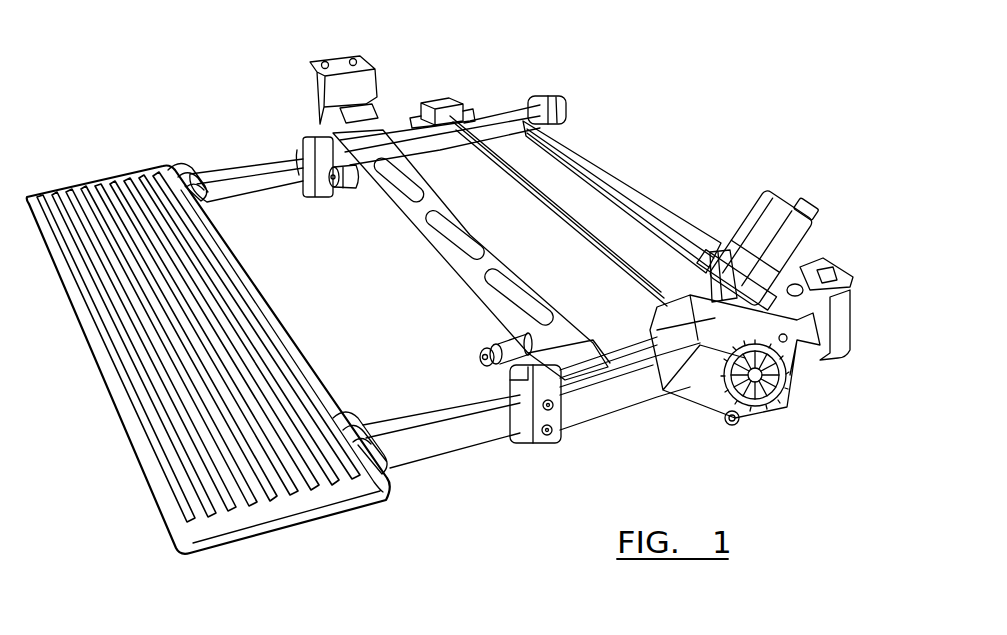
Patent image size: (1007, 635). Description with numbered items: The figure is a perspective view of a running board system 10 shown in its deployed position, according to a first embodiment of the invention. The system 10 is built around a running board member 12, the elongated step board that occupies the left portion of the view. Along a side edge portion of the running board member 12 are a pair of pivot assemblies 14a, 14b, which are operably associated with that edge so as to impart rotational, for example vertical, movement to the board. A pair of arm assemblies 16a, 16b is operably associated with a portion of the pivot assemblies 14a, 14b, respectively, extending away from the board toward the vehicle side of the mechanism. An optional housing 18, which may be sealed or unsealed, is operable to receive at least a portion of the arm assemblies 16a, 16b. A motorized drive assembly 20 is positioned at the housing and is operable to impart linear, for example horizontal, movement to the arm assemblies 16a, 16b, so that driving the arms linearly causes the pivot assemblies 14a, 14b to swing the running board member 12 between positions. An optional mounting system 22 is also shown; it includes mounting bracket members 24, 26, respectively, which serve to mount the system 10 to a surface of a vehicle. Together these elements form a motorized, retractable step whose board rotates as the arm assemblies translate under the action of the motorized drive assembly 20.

The running board system 10 is at (166, 90).
The running board member 12 is at (150, 488).
The pivot assembly 14a is at (390, 472).
The pivot assembly 14b is at (172, 160).
The arm assembly 16a is at (463, 450).
The arm assembly 16b is at (283, 150).
The housing 18 is at (634, 409).
The motorized drive assembly 20 is at (767, 200).
The mounting system 22 is at (409, 84).
The mounting bracket member 24 is at (832, 262).
The mounting bracket member 26 is at (336, 60).